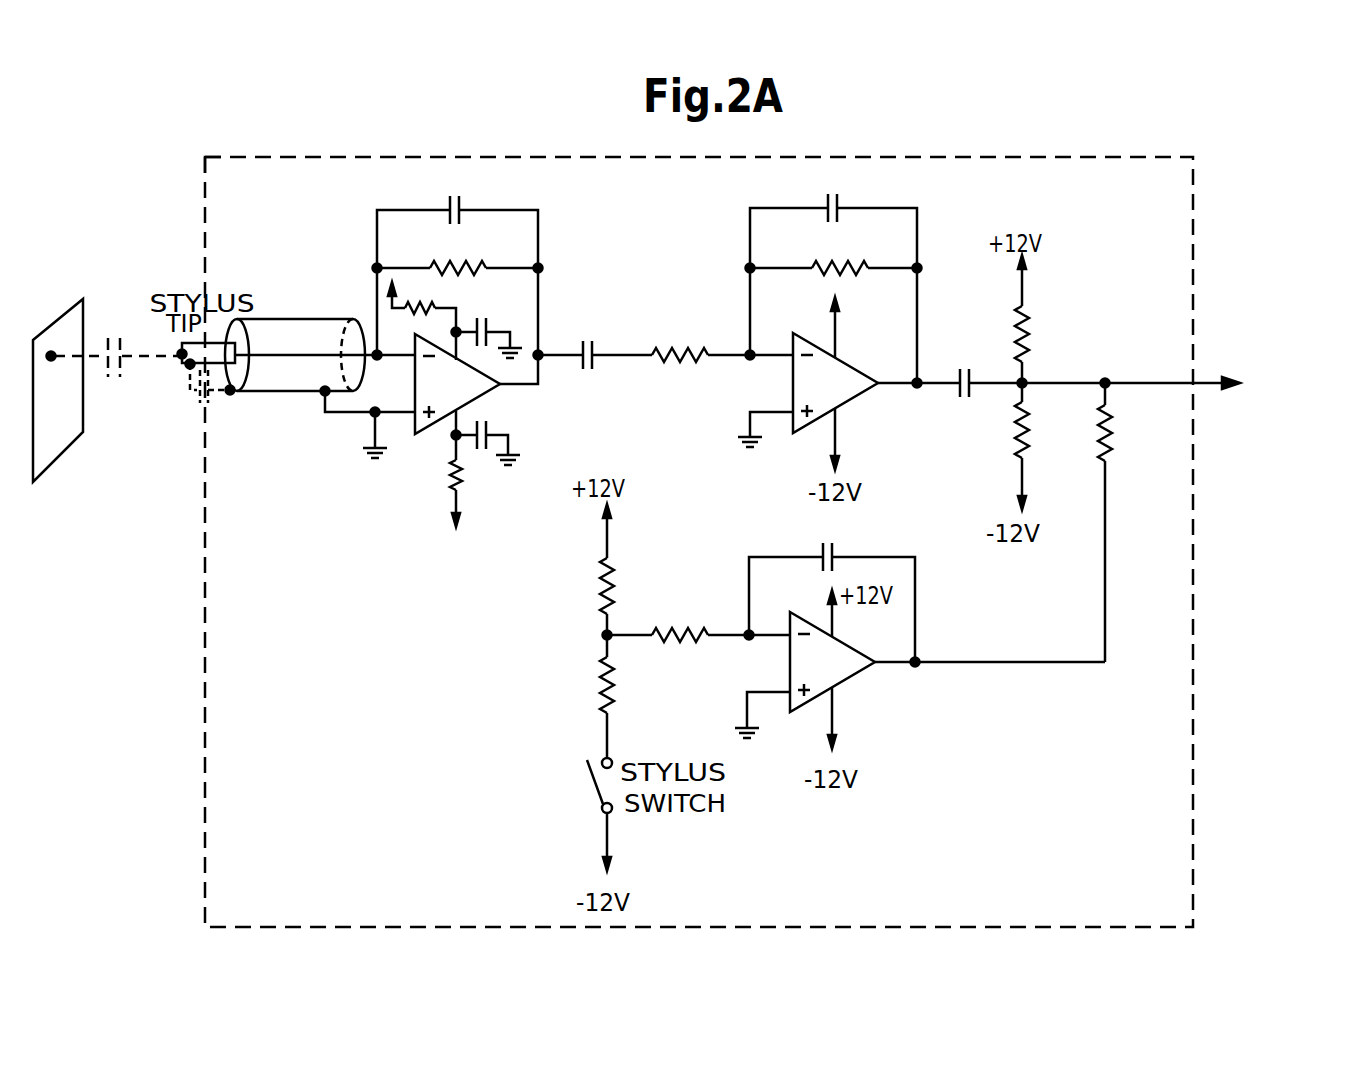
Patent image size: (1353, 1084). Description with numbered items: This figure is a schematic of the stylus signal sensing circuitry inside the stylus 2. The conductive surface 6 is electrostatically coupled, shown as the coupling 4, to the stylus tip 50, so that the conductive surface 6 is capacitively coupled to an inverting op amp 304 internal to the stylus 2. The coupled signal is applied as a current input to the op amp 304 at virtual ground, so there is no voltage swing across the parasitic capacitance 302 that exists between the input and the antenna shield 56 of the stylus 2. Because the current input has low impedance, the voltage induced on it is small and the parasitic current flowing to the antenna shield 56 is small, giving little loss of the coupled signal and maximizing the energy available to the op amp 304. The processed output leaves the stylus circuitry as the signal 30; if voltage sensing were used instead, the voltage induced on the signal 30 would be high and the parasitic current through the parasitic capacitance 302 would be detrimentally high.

The stylus 2 is at (242, 157).
The conductive surface 6 is at (83, 299).
The coupling 4 is at (107, 338).
The stylus tip 50 is at (189, 366).
The parasitic capacitance 302 is at (200, 403).
The antenna shield 56 is at (317, 318).
The inverting op amp 304 is at (417, 434).
The signal 30 is at (1205, 387).